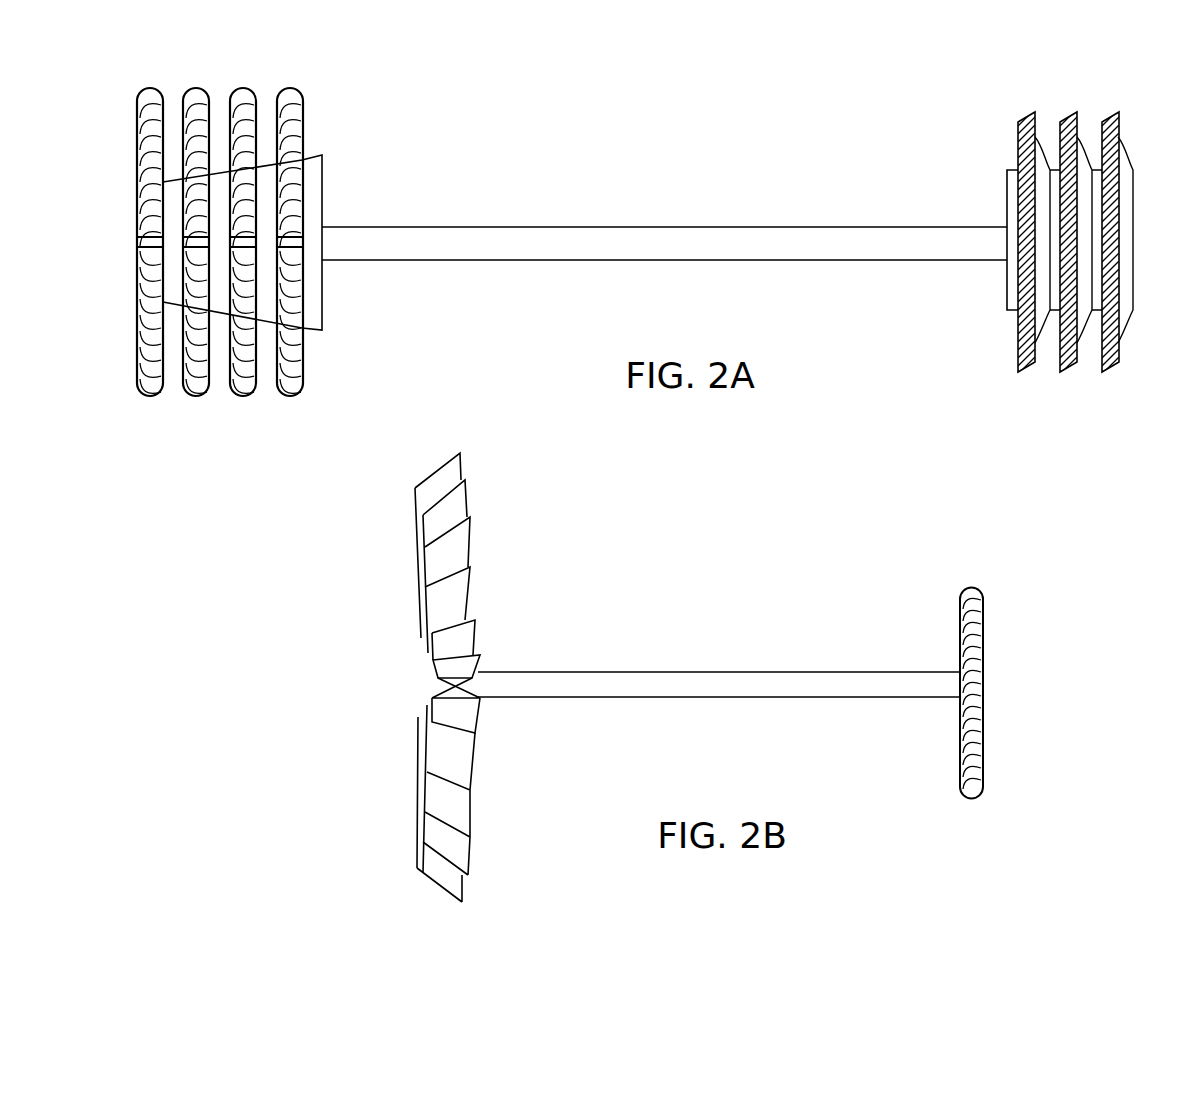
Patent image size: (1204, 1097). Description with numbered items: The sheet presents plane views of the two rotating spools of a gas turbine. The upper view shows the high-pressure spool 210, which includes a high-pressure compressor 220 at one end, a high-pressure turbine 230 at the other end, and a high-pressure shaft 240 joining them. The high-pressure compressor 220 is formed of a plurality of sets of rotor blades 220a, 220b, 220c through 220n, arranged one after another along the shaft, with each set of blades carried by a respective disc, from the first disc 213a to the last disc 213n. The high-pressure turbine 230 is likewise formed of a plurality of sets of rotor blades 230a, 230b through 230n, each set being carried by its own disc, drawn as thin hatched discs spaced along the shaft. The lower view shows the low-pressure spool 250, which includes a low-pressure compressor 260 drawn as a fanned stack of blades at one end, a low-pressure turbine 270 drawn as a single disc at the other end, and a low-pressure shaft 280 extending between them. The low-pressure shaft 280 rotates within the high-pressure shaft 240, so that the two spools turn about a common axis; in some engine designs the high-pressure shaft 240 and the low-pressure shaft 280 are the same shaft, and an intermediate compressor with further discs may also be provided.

In FIG. 2A, the high-pressure spool 210 is at (742, 96).
In FIG. 2A, the high-pressure compressor 220 is at (137, 404).
In FIG. 2A, the rotor blades 220a is at (147, 88).
In FIG. 2A, the rotor blades 220b is at (195, 87).
In FIG. 2A, the rotor blades 220c is at (242, 87).
In FIG. 2A, the rotor blades 220n is at (293, 87).
In FIG. 2A, the disc 213a is at (138, 360).
In FIG. 2A, the disc 213n is at (303, 363).
In FIG. 2A, the high-pressure shaft 240 is at (680, 226).
In FIG. 2A, the high-pressure turbine 230 is at (1013, 377).
In FIG. 2A, the rotor blades 230a is at (1032, 115).
In FIG. 2A, the rotor blades 230b is at (1065, 113).
In FIG. 2A, the rotor blades 230n is at (1115, 113).
In FIG. 2B, the low-pressure spool 250 is at (744, 572).
In FIG. 2B, the low-pressure compressor 260 is at (438, 470).
In FIG. 2B, the low-pressure turbine 270 is at (969, 585).
In FIG. 2B, the low-pressure shaft 280 is at (715, 670).